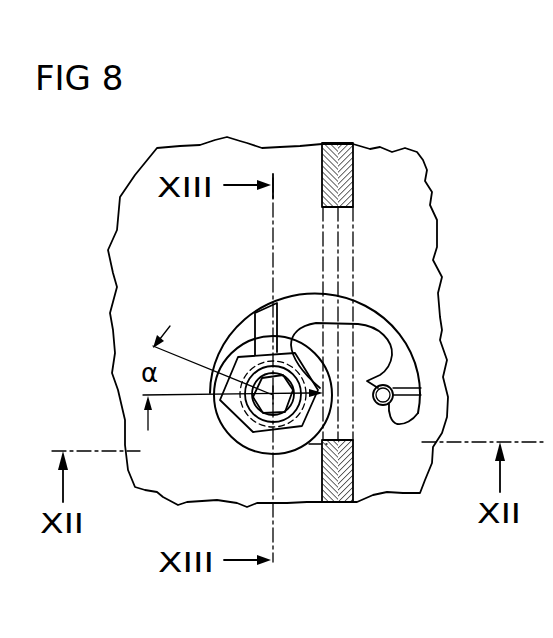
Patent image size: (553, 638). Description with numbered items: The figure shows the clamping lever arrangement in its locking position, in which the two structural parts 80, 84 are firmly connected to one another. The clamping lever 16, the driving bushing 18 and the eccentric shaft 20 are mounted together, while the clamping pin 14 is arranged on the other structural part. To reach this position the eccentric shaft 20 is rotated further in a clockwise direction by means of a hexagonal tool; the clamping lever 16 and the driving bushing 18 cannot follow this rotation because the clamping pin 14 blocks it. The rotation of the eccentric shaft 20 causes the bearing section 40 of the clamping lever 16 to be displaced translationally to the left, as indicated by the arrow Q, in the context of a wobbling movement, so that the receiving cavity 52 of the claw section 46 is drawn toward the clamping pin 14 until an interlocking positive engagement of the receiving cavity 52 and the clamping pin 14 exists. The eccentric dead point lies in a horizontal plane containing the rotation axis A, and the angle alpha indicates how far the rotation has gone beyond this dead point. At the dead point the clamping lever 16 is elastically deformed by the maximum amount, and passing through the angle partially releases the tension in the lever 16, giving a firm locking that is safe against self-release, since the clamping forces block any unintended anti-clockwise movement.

The clamping pin 14 is at (382, 407).
The clamping lever 16 is at (366, 293).
The driving bushing 18 is at (284, 442).
The eccentric shaft 20 is at (240, 357).
The bearing section 40 is at (388, 331).
The claw section 46 is at (401, 426).
The receiving cavity 52 is at (423, 388).
The structural part 80 is at (262, 152).
The structural part 84 is at (392, 157).
The rotation axis A is at (252, 437).
The arrow Q is at (295, 307).